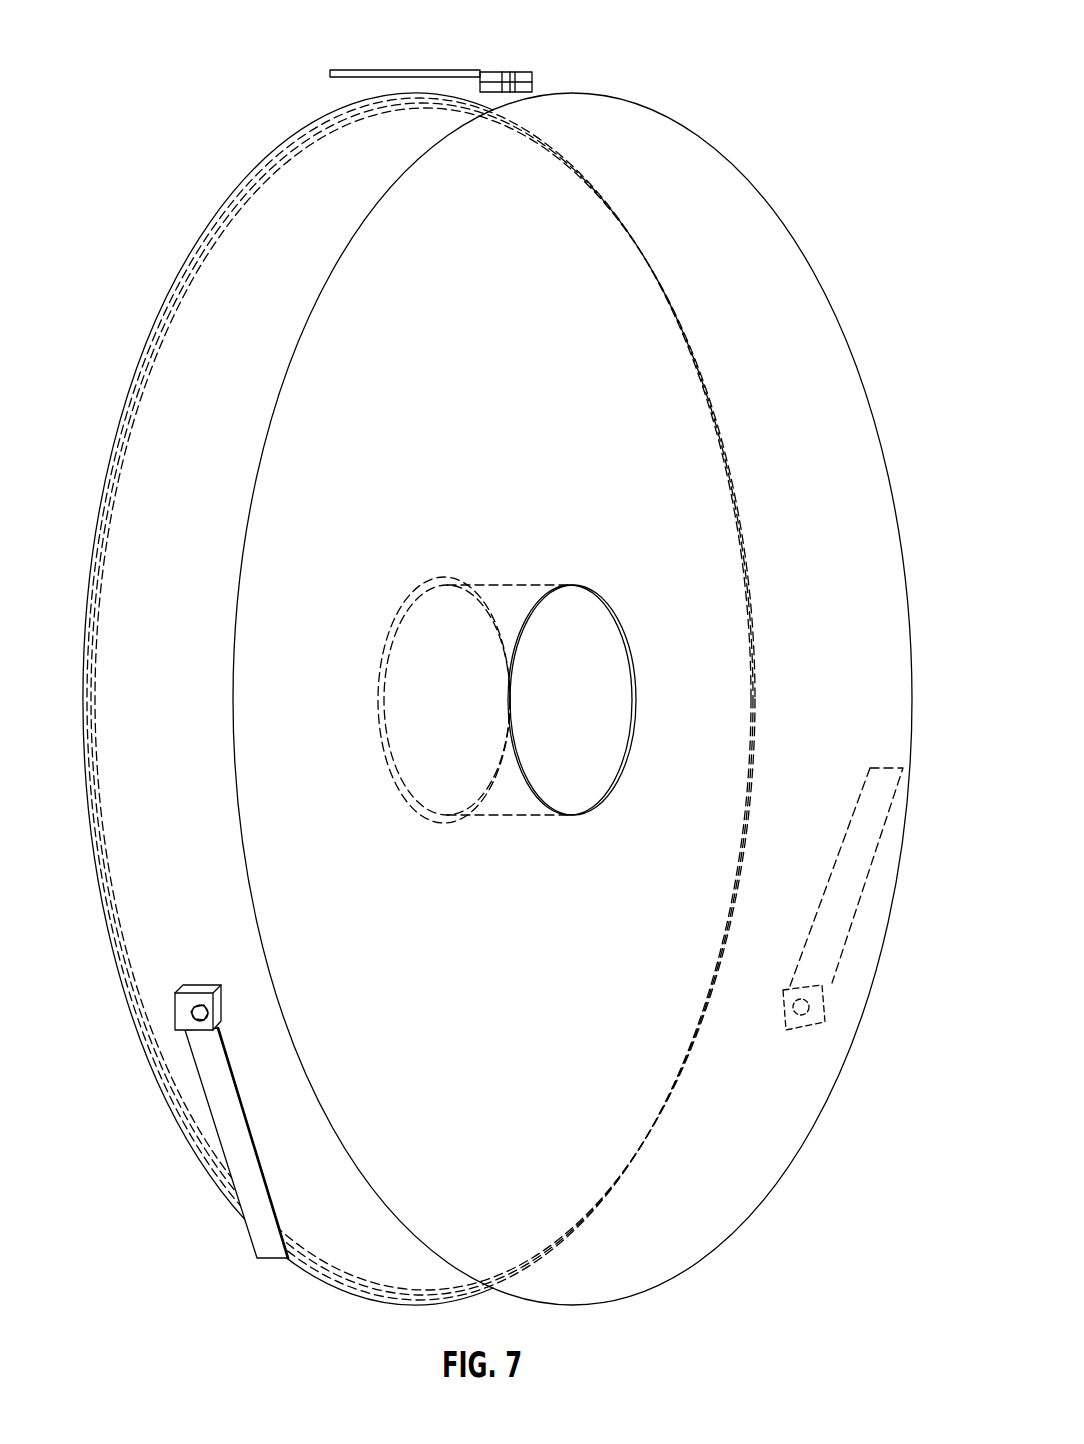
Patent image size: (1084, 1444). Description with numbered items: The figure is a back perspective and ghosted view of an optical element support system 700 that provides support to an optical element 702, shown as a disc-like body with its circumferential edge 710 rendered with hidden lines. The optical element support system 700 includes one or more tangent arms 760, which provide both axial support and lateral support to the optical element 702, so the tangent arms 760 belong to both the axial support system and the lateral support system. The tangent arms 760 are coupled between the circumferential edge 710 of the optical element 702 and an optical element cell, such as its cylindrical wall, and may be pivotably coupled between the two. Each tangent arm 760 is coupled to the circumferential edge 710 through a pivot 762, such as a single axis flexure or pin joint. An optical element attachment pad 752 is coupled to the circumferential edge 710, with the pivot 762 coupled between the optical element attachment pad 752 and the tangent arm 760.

The optical element support system 700 is at (797, 46).
The optical element 702 is at (800, 415).
The circumferential edge 710 is at (145, 995).
The optical element attachment pad 752 is at (528, 90).
The tangent arm 760 is at (410, 70).
The pivot 762 is at (521, 75).